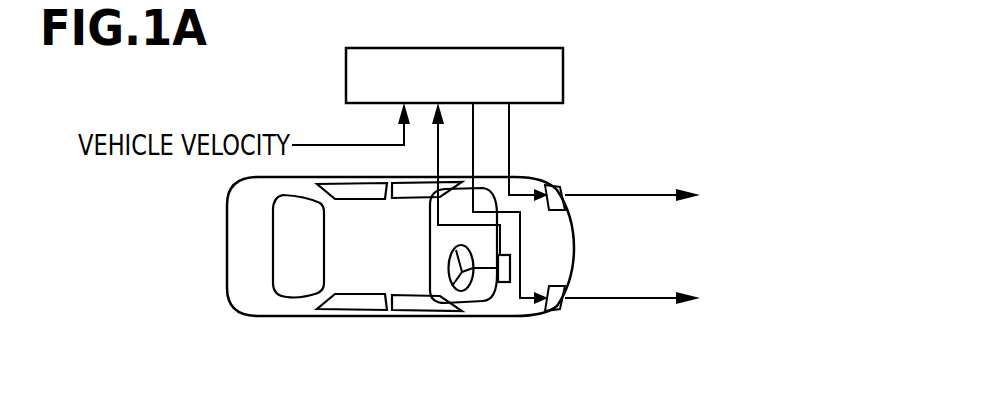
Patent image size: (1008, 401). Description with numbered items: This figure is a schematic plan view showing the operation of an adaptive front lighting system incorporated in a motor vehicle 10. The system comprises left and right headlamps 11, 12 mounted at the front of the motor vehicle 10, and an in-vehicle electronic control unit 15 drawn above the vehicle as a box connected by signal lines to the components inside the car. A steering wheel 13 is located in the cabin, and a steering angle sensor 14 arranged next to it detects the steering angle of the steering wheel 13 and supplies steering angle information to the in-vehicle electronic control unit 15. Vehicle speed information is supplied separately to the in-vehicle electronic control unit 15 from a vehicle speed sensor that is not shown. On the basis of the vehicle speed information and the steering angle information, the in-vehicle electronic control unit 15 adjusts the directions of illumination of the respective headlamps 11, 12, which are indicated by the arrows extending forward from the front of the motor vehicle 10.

The motor vehicle 10 is at (325, 316).
The left headlamp 11 is at (556, 191).
The right headlamp 12 is at (556, 306).
The steering wheel 13 is at (466, 292).
The steering angle sensor 14 is at (503, 283).
The in-vehicle electronic control unit 15 is at (563, 77).